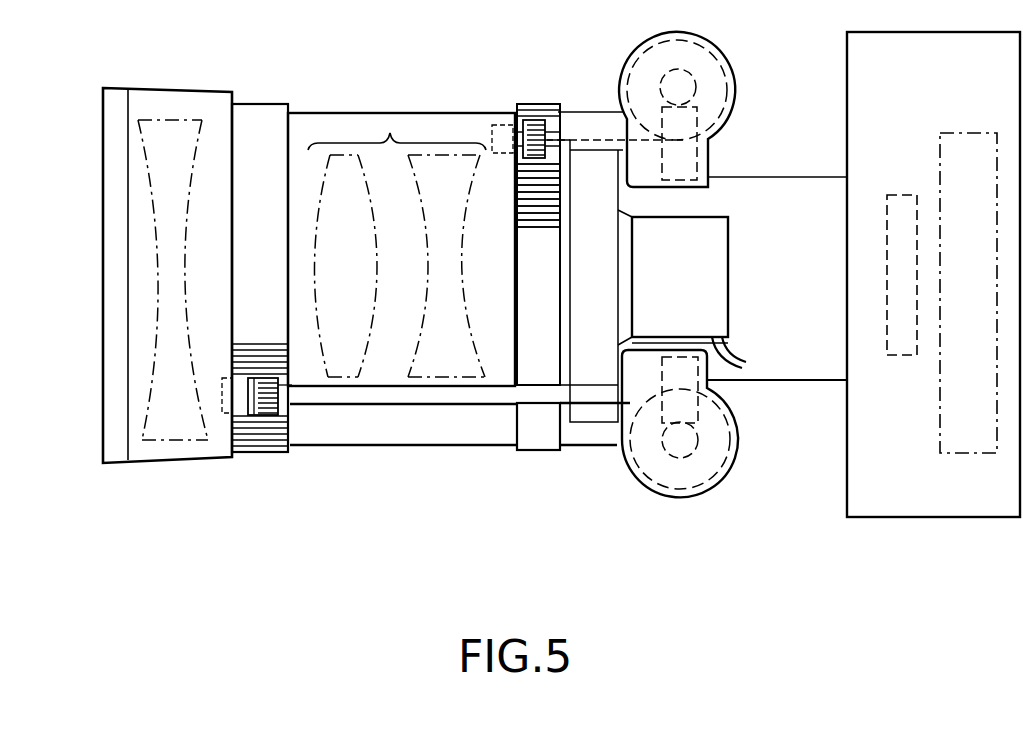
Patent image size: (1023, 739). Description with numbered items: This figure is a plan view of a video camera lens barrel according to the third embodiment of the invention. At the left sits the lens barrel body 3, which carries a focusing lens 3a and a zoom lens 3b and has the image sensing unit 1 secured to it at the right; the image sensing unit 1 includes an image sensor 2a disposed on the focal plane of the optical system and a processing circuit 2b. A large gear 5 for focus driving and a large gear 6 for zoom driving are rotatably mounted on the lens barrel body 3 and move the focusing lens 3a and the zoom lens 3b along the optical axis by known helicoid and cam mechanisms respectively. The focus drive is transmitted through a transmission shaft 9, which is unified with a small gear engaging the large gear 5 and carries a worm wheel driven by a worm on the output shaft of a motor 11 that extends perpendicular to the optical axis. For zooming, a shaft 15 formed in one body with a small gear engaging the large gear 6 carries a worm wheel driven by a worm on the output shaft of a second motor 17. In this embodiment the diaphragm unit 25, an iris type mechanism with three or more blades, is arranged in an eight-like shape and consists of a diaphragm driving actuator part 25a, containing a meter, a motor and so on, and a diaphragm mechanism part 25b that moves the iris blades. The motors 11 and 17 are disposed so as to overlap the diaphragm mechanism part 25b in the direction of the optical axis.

The image sensing unit 1 is at (912, 503).
The image sensor 2a is at (895, 195).
The processing circuit 2b is at (960, 133).
The lens barrel body 3 is at (373, 113).
The focusing lens 3a is at (177, 122).
The zoom lens 3b is at (390, 134).
The large gear for focus driving 5 is at (292, 425).
The large gear for zoom driving 6 is at (518, 203).
The transmission shaft 9 is at (395, 394).
The motor 11 is at (683, 477).
The shaft 15 is at (548, 128).
The motor 17 is at (723, 82).
The diaphragm unit 25 is at (597, 282).
The diaphragm driving actuator part 25a is at (718, 297).
The diaphragm mechanism part 25b is at (593, 417).